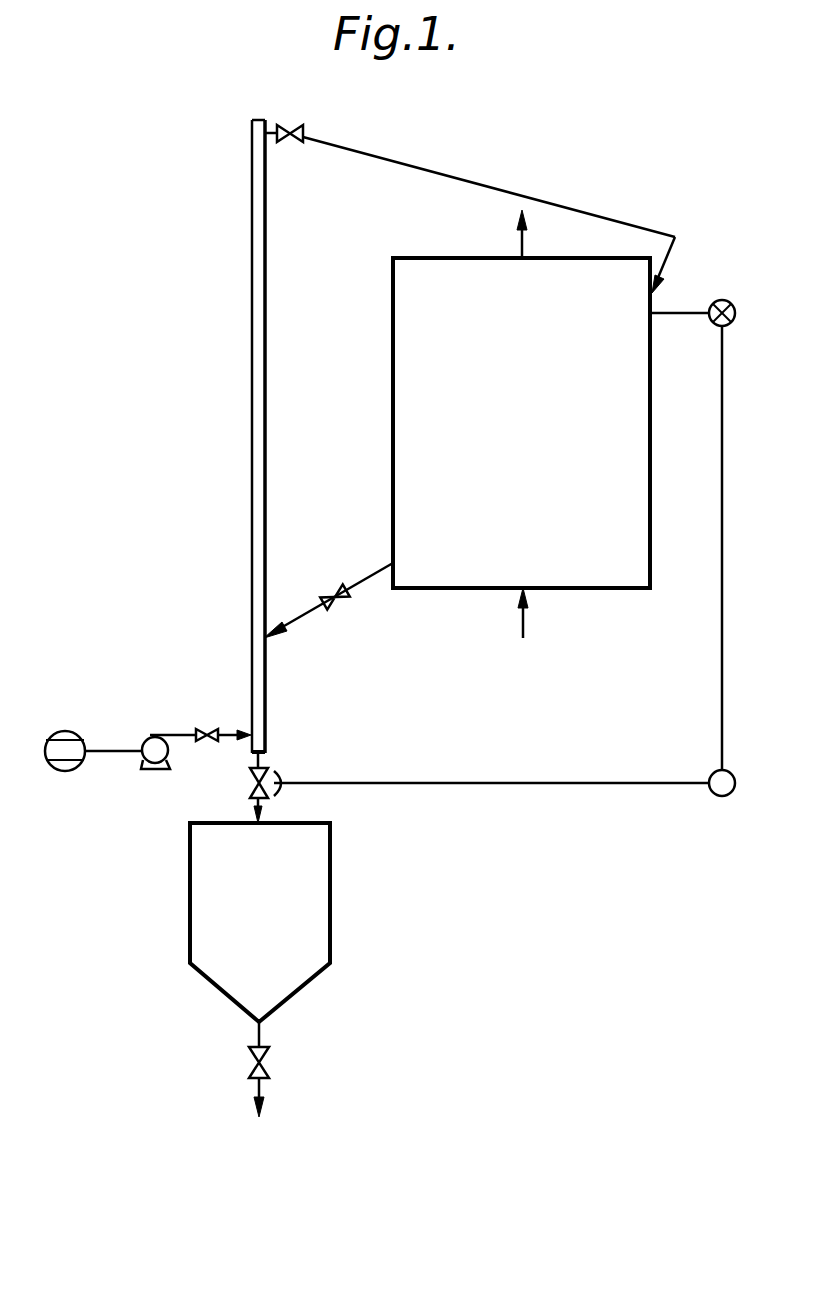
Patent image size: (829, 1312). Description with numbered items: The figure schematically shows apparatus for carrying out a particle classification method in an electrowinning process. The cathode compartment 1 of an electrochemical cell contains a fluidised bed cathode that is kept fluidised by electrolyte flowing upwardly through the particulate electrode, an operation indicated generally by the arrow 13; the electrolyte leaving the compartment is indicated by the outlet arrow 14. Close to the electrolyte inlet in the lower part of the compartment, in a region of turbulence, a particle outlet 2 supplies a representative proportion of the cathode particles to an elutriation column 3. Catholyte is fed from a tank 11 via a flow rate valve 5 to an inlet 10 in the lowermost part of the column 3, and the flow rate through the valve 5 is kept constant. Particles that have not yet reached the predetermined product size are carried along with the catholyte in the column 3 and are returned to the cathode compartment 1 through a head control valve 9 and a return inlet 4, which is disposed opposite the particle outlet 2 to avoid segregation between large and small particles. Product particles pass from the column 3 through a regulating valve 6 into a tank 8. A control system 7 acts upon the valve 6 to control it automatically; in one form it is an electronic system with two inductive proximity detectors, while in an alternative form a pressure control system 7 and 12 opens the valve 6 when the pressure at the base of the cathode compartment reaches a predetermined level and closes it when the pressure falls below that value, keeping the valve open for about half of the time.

The cathode compartment 1 is at (529, 440).
The particle outlet 2 is at (343, 585).
The elutriation column 3 is at (264, 502).
The return inlet 4 is at (664, 272).
The flow rate valve 5 is at (211, 728).
The regulating valve 6 is at (280, 771).
The electronic control system 7 is at (712, 324).
The tank 8 is at (310, 916).
The head control valve 9 is at (296, 128).
The inlet 10 is at (246, 732).
The tank 11 is at (75, 731).
The pressure control system 12 is at (718, 798).
The arrow 13 is at (520, 622).
The outlet line 14 is at (518, 233).